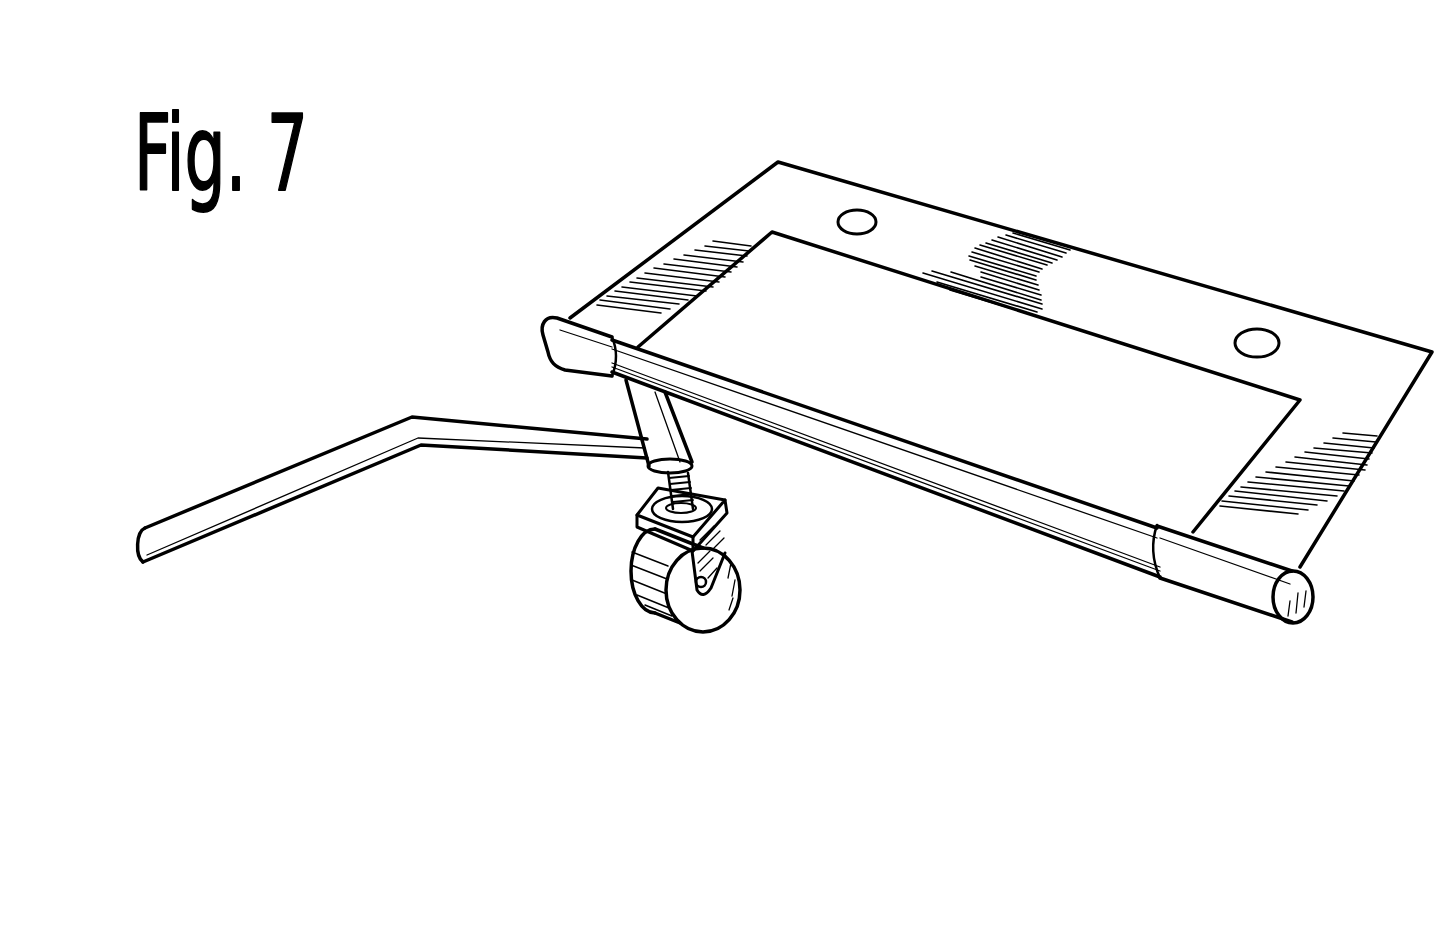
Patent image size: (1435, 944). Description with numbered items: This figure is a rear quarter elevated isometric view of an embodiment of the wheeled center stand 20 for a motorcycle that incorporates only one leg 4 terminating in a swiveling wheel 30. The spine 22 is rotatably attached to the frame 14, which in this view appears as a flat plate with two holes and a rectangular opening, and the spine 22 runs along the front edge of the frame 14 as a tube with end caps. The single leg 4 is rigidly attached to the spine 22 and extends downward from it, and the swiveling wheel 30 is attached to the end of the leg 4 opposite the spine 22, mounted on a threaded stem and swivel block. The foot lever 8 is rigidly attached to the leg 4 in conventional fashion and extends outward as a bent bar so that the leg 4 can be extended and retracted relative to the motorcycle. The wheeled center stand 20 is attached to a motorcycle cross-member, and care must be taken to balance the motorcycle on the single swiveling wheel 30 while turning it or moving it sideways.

The wheeled center stand 20 is at (1240, 215).
The frame 14 is at (737, 212).
The spine 22 is at (890, 447).
The leg 4 is at (693, 433).
The swiveling wheel 30 is at (633, 557).
The foot lever 8 is at (273, 475).